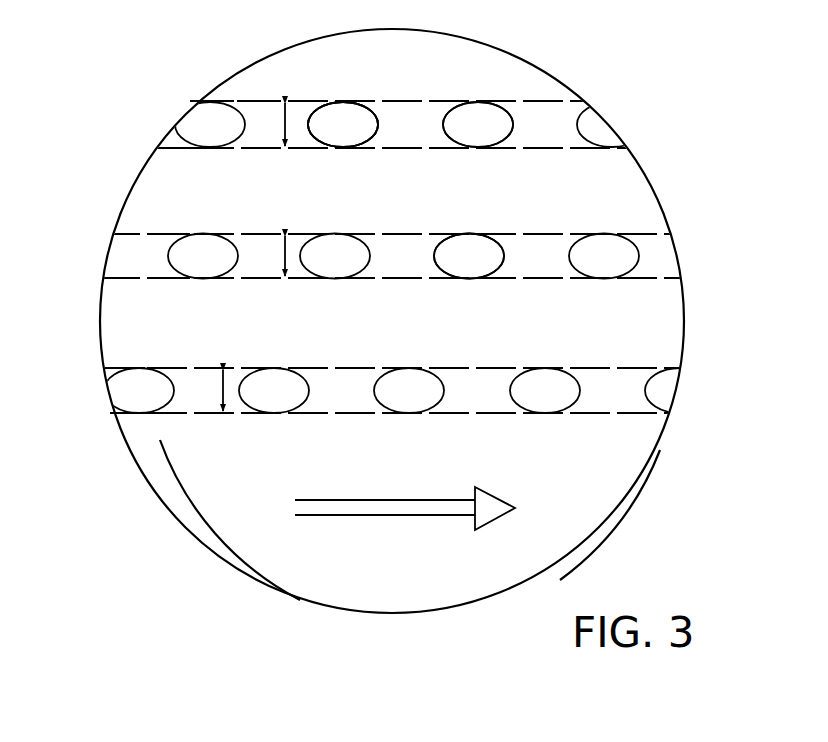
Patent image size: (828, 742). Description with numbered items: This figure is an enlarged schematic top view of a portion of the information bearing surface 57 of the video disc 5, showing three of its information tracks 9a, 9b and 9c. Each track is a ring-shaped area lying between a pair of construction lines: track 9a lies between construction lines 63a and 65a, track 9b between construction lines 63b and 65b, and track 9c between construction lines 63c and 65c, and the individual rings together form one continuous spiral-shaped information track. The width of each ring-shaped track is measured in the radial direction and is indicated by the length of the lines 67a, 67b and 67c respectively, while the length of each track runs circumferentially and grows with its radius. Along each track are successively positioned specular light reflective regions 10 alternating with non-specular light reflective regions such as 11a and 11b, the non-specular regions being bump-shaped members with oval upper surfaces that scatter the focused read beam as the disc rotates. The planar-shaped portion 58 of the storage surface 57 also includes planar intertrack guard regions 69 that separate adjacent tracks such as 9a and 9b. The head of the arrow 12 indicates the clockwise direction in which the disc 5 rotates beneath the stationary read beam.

The video disc 5 is at (558, 72).
The track 9a is at (165, 131).
The track 9b is at (98, 260).
The track 9c is at (100, 392).
The specular light reflective member 10 is at (410, 120).
The non-specular light reflective member 11a is at (477, 132).
The non-specular light reflective member 11b is at (342, 120).
The arrow 12 is at (385, 518).
The information bearing surface 57 is at (200, 502).
The planar-shaped portion 58 is at (607, 487).
The construction line 63a is at (220, 99).
The construction line 63b is at (170, 233).
The construction line 63c is at (110, 366).
The construction line 65a is at (176, 148).
The construction line 65b is at (173, 287).
The construction line 65c is at (140, 417).
The line 67a is at (283, 123).
The line 67b is at (283, 254).
The line 67c is at (220, 392).
The intertrack guard region 69 is at (402, 207).